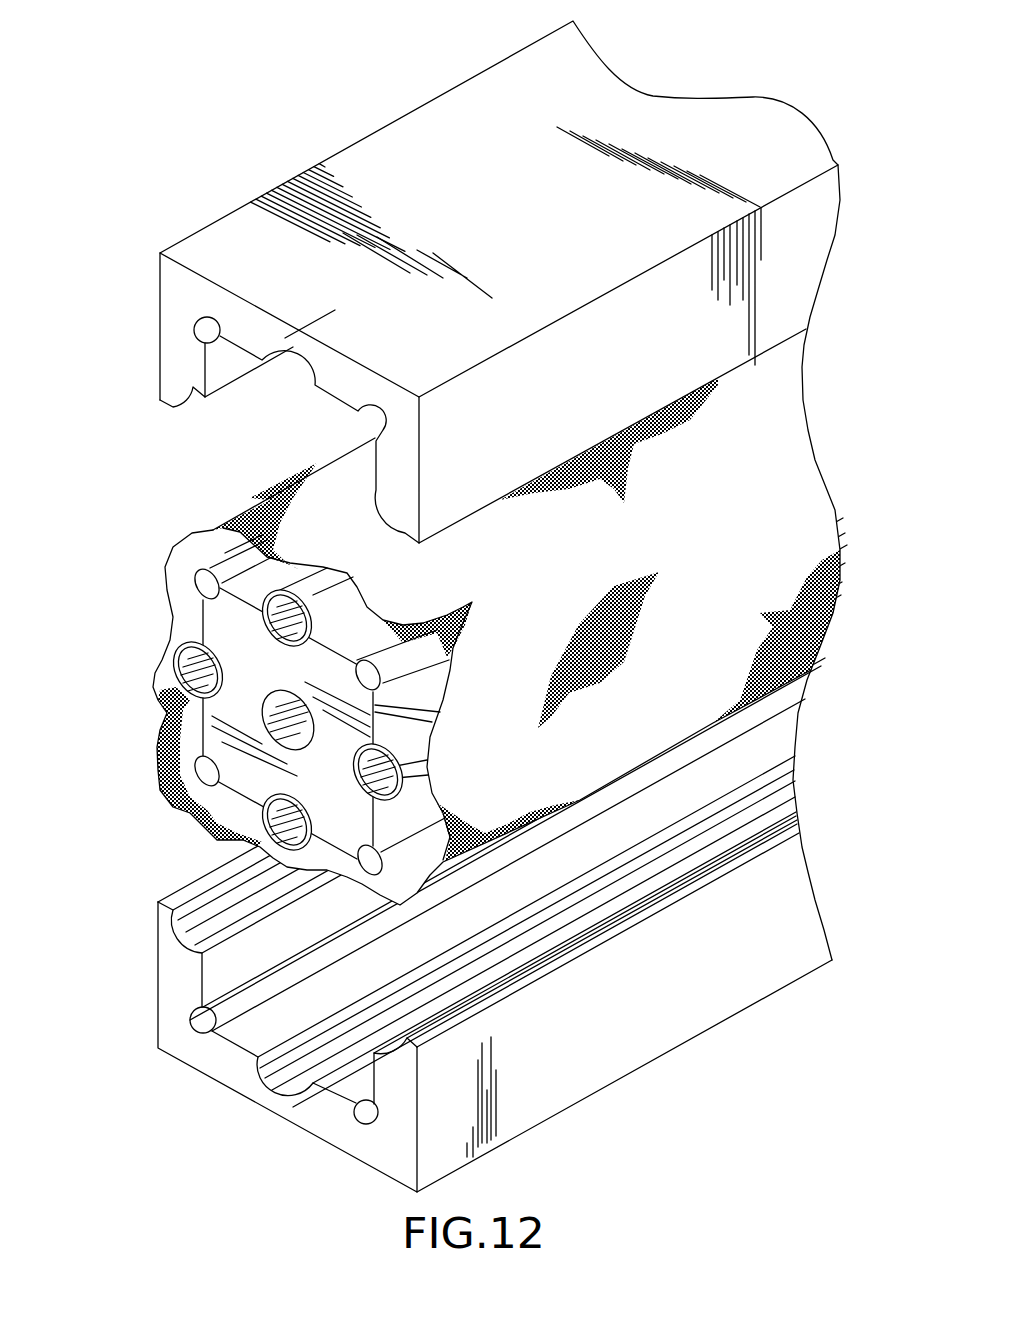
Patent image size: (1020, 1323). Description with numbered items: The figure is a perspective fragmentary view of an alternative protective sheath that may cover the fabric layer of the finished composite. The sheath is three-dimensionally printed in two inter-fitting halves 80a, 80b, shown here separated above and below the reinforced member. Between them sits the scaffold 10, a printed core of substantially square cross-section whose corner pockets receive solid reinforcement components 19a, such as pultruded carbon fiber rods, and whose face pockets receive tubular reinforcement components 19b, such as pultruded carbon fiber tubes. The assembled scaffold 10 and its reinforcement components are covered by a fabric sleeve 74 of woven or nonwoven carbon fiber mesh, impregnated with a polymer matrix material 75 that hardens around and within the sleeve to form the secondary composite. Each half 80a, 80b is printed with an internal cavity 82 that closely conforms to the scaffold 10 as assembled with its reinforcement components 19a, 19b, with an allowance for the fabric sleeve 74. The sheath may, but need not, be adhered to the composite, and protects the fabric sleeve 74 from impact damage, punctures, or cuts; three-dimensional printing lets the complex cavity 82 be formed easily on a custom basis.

The scaffold 10 is at (130, 132).
The reinforcement components 19a is at (205, 578).
The tubular reinforcement components 19b is at (165, 668).
The fabric sleeve 74 is at (773, 524).
The polymer matrix material 75 is at (770, 378).
The inter-fitting half 80a is at (467, 110).
The inter-fitting half 80b is at (623, 1023).
The internal cavity 82 is at (216, 418).